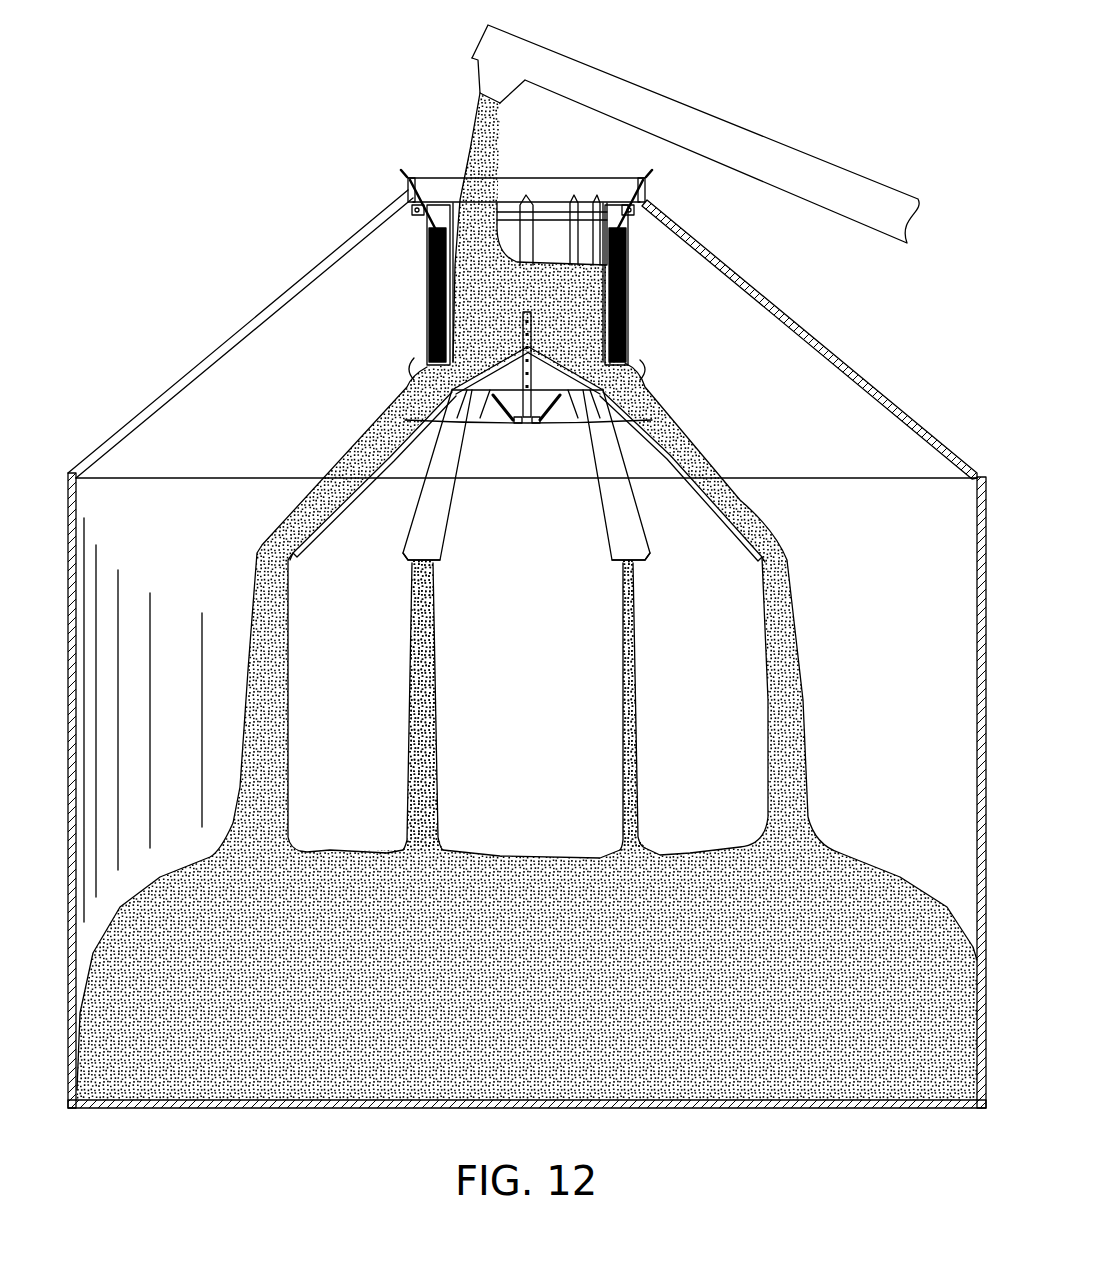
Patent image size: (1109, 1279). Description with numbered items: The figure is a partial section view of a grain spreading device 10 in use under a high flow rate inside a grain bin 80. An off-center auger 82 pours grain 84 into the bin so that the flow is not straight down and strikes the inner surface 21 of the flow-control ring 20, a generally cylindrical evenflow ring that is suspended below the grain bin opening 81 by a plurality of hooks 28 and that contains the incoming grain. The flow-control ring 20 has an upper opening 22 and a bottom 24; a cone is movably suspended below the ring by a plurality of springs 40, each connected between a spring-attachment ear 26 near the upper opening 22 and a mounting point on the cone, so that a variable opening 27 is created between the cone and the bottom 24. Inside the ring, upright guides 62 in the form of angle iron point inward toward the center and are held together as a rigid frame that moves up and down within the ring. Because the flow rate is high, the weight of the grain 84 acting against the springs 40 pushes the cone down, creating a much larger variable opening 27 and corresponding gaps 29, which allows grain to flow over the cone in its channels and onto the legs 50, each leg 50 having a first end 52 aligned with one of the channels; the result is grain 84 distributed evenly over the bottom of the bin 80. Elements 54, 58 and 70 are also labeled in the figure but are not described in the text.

The grain spreading device 10 is at (760, 60).
The flow-control ring 20 is at (510, 227).
The inner surface 21 is at (552, 220).
The upper opening 22 is at (512, 165).
The bottom 24 is at (540, 373).
The spring-attachment ear 26 is at (436, 225).
The variable opening 27 is at (396, 363).
The hooks 28 is at (405, 177).
The gaps 29 is at (638, 372).
The springs 40 is at (428, 293).
The legs 50 is at (427, 510).
The first end 52 is at (388, 388).
The chute outlet 54 is at (655, 558).
The strut 58 is at (493, 406).
The upright guides 62 is at (584, 204).
The center post 70 is at (532, 320).
The grain bin 80 is at (878, 382).
The grain bin opening 81 is at (610, 177).
The off-center auger 82 is at (593, 87).
The grain 84 is at (435, 677).